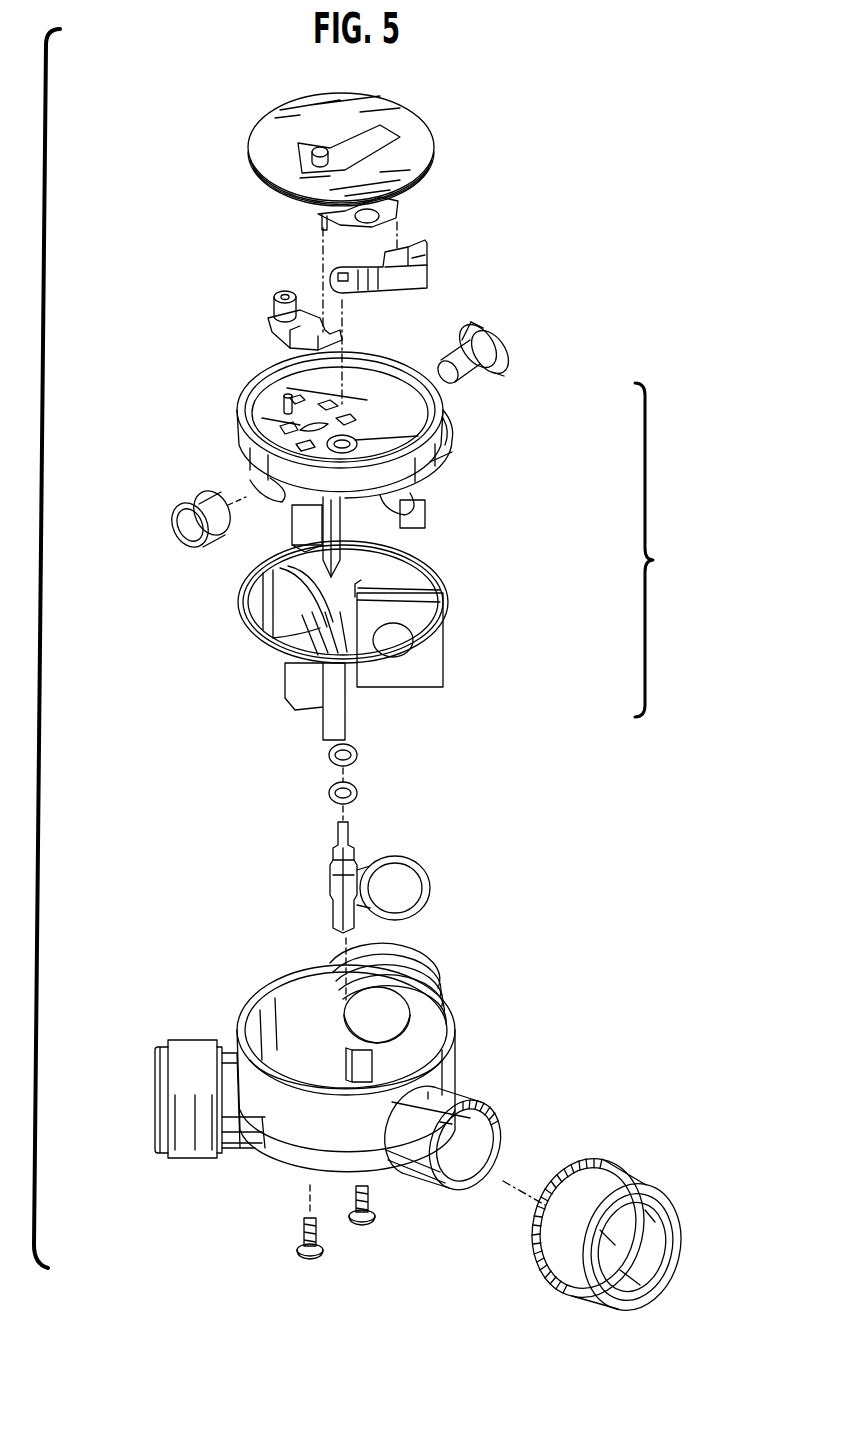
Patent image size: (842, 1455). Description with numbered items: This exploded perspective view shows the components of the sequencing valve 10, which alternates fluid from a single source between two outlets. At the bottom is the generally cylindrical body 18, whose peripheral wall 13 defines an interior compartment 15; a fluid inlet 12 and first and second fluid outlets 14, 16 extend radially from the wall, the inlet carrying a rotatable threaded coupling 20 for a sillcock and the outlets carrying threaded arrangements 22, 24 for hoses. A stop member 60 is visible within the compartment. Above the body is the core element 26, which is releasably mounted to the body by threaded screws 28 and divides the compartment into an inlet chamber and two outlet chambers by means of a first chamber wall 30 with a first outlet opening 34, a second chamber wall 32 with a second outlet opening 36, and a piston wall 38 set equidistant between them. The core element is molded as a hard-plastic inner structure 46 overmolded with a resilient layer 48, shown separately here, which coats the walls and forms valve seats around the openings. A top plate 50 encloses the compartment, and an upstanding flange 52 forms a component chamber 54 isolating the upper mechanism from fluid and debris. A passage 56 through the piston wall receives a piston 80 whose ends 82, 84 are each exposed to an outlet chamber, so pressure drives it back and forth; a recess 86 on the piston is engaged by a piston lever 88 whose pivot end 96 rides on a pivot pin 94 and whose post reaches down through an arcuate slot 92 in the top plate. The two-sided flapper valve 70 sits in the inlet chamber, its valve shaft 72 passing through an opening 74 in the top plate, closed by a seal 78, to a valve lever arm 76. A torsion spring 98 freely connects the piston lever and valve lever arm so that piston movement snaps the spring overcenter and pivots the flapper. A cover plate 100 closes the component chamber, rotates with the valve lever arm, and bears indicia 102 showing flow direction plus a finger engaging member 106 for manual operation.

The sequencing valve 10 is at (474, 884).
The fluid inlet 12 is at (463, 1092).
The peripheral wall 13 is at (185, 953).
The first fluid outlet 14 is at (437, 977).
The interior compartment 15 is at (316, 1020).
The second fluid outlet 16 is at (245, 1155).
The body 18 is at (436, 1076).
The coupling 20 is at (638, 1177).
The threaded arrangement 22 is at (417, 943).
The threaded arrangement 24 is at (190, 1043).
The core element 26 is at (660, 550).
The threaded screws 28 is at (360, 1227).
The first chamber wall 30 is at (425, 512).
The second chamber wall 32 is at (403, 555).
The first outlet opening 34 is at (410, 515).
The second outlet opening 36 is at (297, 540).
The piston wall 38 is at (303, 518).
The inner structure 46 is at (455, 446).
The resilient layer 48 is at (450, 603).
The top plate 50 is at (373, 403).
The flange 52 is at (247, 397).
The component chamber 54 is at (393, 433).
The passage 56 is at (257, 483).
The stop member 60 is at (363, 1057).
The flapper valve 70 is at (410, 863).
The valve shaft 72 is at (333, 873).
The opening 74 is at (443, 460).
The valve lever arm 76 is at (407, 292).
The seal 78 is at (357, 795).
The piston 80 is at (497, 367).
The piston end 82 is at (492, 338).
The piston end 84 is at (183, 530).
The recess 86 is at (443, 347).
The piston lever 88 is at (293, 343).
The arcuate slot 92 is at (323, 417).
The pivot pin 94 is at (270, 375).
The pivot end 96 is at (285, 292).
The torsion spring 98 is at (398, 207).
The cover plate 100 is at (408, 132).
The indicia 102 is at (343, 140).
The finger engaging member 106 is at (313, 150).